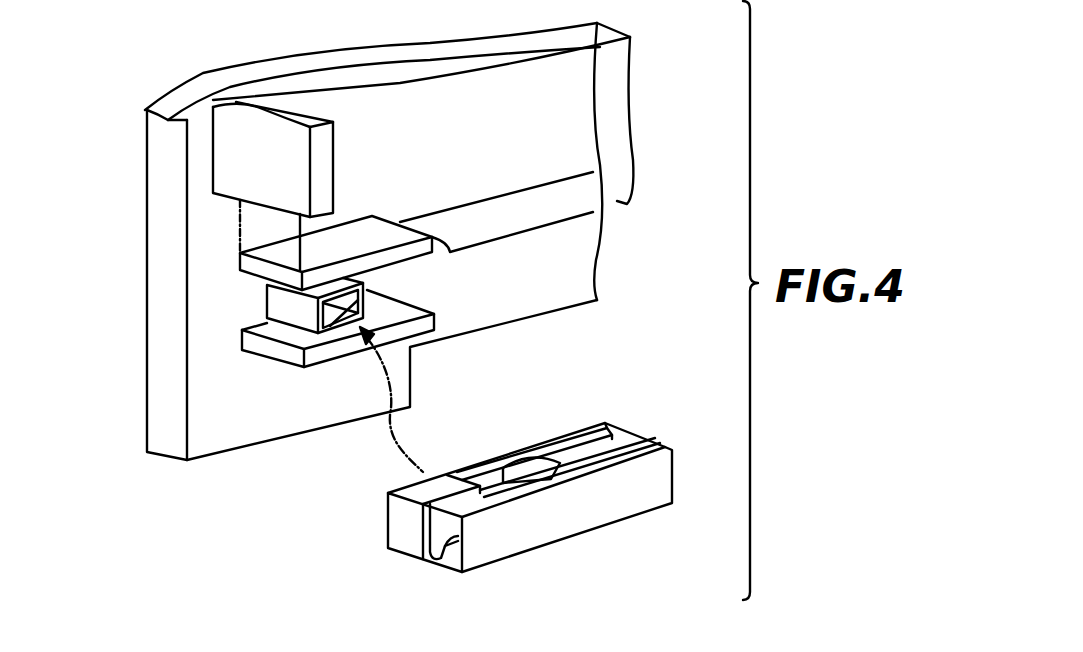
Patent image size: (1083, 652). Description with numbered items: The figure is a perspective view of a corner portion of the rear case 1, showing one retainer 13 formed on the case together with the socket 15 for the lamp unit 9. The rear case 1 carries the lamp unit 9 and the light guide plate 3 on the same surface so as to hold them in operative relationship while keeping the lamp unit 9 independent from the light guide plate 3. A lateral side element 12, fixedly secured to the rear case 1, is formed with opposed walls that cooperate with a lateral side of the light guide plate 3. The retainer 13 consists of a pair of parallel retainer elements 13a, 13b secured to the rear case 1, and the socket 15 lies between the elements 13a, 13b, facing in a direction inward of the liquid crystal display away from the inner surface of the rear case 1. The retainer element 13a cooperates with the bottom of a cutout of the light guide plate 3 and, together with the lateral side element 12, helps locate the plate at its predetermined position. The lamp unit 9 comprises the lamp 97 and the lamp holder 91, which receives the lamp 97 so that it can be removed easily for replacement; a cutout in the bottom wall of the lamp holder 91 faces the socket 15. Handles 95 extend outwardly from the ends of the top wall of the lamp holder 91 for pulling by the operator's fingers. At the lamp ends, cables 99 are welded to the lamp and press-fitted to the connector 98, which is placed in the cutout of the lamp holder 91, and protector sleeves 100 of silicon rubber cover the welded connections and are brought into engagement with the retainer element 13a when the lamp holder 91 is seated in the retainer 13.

The rear case 1 is at (242, 432).
The light guide plate 3 is at (617, 118).
The lamp unit 9 is at (532, 484).
The lateral side element 12 is at (330, 157).
The retainer 13 is at (78, 270).
The retainer element 13a is at (243, 268).
The retainer element 13b is at (243, 342).
The socket 15 is at (363, 291).
The lamp holder 91 is at (657, 479).
The handle 95 is at (443, 560).
The lamp 97 is at (637, 443).
The connector 98 is at (502, 490).
The cable 99 is at (423, 558).
The protector sleeve 100 is at (560, 479).